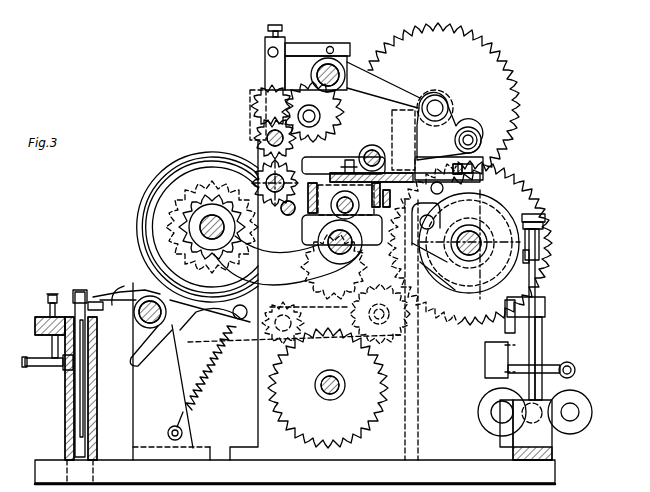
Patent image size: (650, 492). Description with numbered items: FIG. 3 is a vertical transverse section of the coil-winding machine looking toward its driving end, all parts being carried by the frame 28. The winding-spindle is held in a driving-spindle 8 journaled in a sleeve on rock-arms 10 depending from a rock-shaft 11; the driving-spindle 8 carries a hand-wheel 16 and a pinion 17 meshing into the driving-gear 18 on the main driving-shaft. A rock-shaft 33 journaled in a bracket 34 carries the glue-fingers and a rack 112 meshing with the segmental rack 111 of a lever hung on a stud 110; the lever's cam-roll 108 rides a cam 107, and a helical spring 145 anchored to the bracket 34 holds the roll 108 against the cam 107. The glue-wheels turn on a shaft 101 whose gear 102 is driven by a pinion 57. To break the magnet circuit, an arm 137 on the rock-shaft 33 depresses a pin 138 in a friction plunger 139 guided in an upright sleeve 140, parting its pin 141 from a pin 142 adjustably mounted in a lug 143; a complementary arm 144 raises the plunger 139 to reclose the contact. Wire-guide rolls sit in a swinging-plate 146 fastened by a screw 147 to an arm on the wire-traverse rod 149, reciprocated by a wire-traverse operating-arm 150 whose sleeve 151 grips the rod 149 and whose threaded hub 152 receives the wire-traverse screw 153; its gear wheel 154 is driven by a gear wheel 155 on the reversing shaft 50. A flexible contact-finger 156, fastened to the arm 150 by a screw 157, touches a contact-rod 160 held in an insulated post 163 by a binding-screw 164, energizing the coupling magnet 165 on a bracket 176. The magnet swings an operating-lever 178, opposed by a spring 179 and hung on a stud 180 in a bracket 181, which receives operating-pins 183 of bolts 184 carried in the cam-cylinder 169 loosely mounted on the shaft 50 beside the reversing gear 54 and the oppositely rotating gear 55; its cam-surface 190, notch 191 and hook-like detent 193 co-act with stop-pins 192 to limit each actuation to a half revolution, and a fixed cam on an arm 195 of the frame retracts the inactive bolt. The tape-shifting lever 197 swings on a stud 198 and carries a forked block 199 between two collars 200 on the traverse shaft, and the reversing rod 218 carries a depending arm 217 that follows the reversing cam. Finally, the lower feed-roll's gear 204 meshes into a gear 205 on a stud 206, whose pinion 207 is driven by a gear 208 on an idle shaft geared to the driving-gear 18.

The driving-spindle 8 is at (200, 232).
The rock-arms 10 is at (290, 282).
The rock-shaft 11 is at (296, 254).
The hand-wheel 16 is at (145, 211).
The pinion 17 is at (205, 200).
The driving-gear 18 is at (247, 194).
The base or frame 28 is at (246, 103).
The rock-shaft 33 is at (134, 314).
The bracket 34 is at (164, 418).
The reversing shaft 50 is at (472, 252).
The reversing-gear 54 is at (480, 239).
The gear 55 is at (332, 256).
The pinion 57 is at (414, 336).
The shaft 101 is at (327, 394).
The gear 102 is at (328, 388).
The cam 107 is at (352, 302).
The cam-roll 108 is at (372, 344).
The stud 110 is at (292, 340).
The segmental rack 111 is at (171, 303).
The rack 112 is at (173, 386).
The arm 137 is at (124, 292).
The pin 138 is at (92, 300).
The friction plunger 139 is at (78, 300).
The upright sleeve 140 is at (98, 410).
The pin 141 is at (50, 366).
The pin 142 is at (50, 342).
The lug 143 is at (40, 316).
The arm 144 is at (133, 364).
The helical spring 145 is at (213, 383).
The swinging-plate 146 is at (484, 184).
The screw 147 is at (413, 194).
The wire-traverse rod 149 is at (350, 62).
The wire-traverse operating-arm 150 is at (388, 80).
The sleeve 151 is at (314, 73).
The internally threaded hub 152 is at (438, 95).
The wire-traverse screw 153 is at (443, 106).
The gear wheel 154 is at (488, 70).
The gear wheel 155 is at (505, 194).
The flexible contact-finger 156 is at (311, 41).
The screw 157 is at (331, 46).
The contact-rod 160 is at (268, 50).
The post 163 is at (268, 68).
The binding-screw 164 is at (280, 34).
The coupling-magnet 165 is at (590, 402).
The cam-cylinder 169 is at (515, 207).
The bracket 176 is at (548, 432).
The operating-lever 178 is at (542, 362).
The spring 179 is at (575, 367).
The stud 180 is at (546, 304).
The bracket 181 is at (505, 328).
The operating-pins 183 is at (532, 256).
The bolts 184 is at (469, 245).
The cam-surface 190 is at (540, 267).
The notch 191 is at (541, 243).
The stop-pins 192 is at (545, 226).
The hook-like detent 193 is at (546, 218).
The arm 195 is at (412, 378).
The tape-shifting lever 197 is at (378, 141).
The stud 198 is at (415, 153).
The forked block 199 is at (363, 157).
The collars 200 is at (333, 200).
The gear 204 is at (322, 116).
The gear 205 is at (250, 152).
The stud 206 is at (262, 136).
The pinion 207 is at (245, 120).
The gear 208 is at (256, 94).
The arm 217 is at (486, 168).
The reversing rod 218 is at (471, 131).